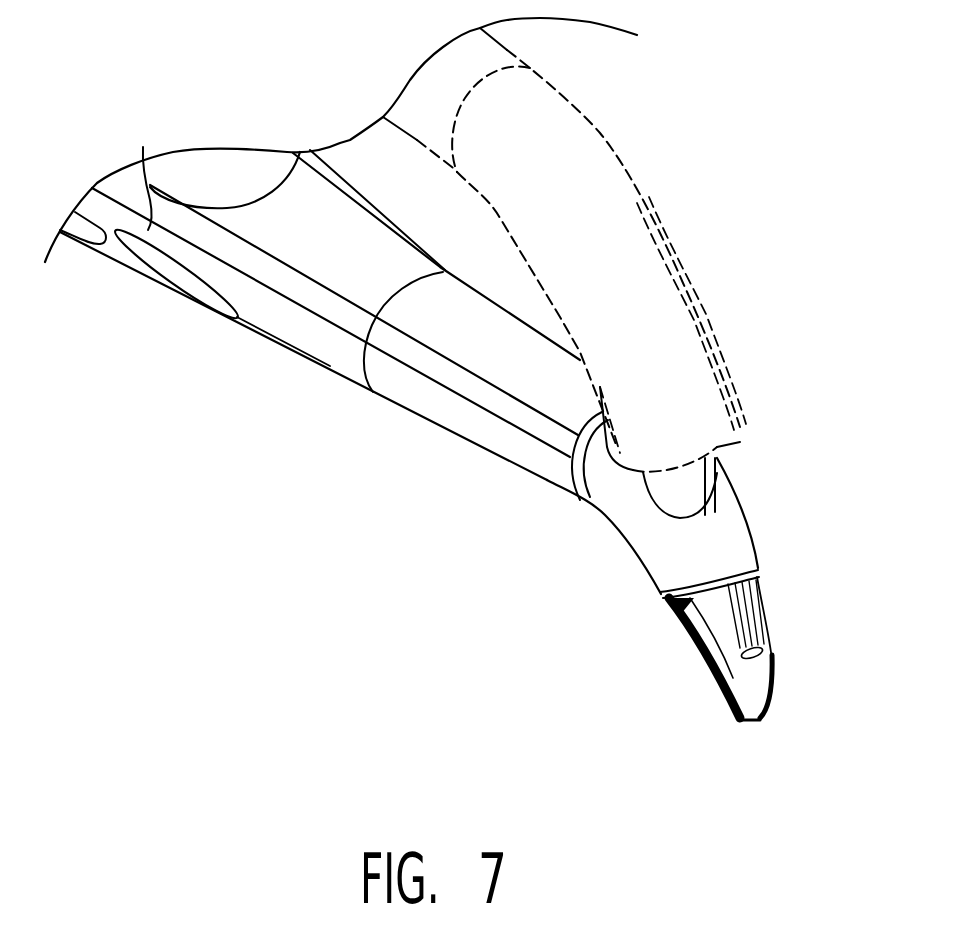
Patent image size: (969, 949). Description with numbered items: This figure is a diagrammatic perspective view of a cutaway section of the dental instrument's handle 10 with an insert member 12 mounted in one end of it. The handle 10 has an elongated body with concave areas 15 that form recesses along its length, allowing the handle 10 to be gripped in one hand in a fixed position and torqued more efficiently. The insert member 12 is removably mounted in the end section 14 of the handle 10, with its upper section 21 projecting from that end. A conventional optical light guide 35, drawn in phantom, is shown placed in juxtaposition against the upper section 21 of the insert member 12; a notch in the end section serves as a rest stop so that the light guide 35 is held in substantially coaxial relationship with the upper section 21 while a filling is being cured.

The handle 10 is at (411, 408).
The insert member 12 is at (706, 654).
The end section 14 is at (731, 554).
The concave areas 15 is at (165, 267).
The upper section 21 is at (718, 466).
The optical light guide 35 is at (597, 136).